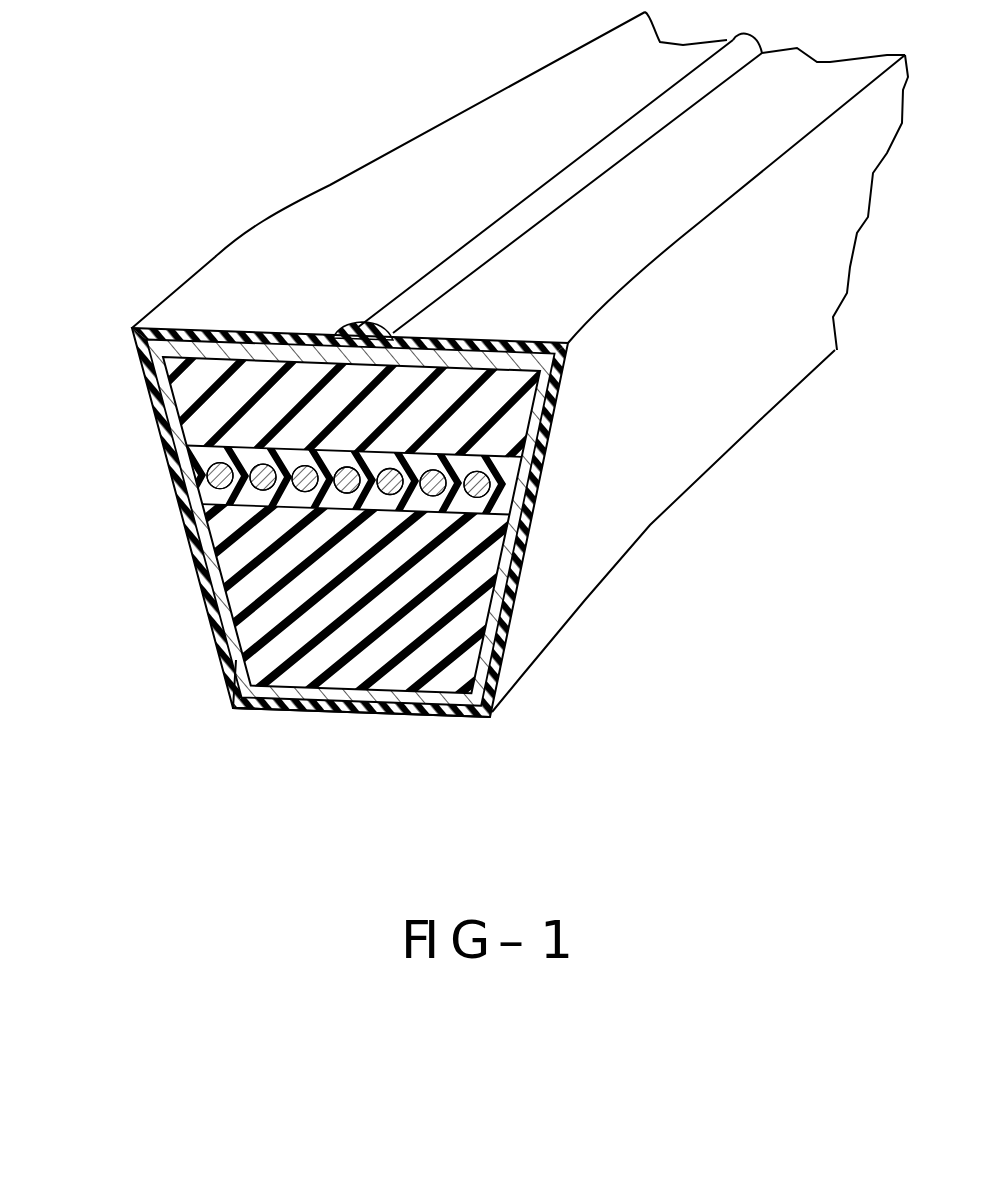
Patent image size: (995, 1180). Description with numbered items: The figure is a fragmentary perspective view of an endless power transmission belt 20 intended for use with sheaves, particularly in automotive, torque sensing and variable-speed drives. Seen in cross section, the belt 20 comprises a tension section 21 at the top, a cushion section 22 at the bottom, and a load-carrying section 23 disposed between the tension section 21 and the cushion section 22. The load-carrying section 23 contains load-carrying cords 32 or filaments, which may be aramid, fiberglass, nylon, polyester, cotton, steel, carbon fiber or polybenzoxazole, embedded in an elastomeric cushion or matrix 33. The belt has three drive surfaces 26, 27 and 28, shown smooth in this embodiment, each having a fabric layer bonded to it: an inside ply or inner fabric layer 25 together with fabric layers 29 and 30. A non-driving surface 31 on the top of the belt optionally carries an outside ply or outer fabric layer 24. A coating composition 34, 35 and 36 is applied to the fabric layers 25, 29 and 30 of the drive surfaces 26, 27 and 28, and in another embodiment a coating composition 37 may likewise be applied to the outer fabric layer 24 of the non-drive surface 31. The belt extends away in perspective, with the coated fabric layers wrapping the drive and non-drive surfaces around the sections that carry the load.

The endless power transmission belt 20 is at (262, 138).
The tension section 21 is at (208, 428).
The cushion section 22 is at (240, 644).
The load-carrying section 23 is at (198, 462).
The outer fabric layer 24 is at (167, 333).
The inner fabric layer 25 is at (307, 693).
The drive surface 26 is at (420, 716).
The drive surface 27 is at (745, 372).
The drive surface 28 is at (228, 688).
The fabric layer 29 is at (520, 633).
The fabric layer 30 is at (210, 562).
The non-driving surface 31 is at (510, 118).
The load-carrying cords 32 is at (450, 518).
The elastomeric cushion 33 is at (535, 444).
The coating composition 34 is at (505, 678).
The coating composition 35 is at (366, 708).
The coating composition 36 is at (147, 358).
The coating composition 37 is at (263, 333).